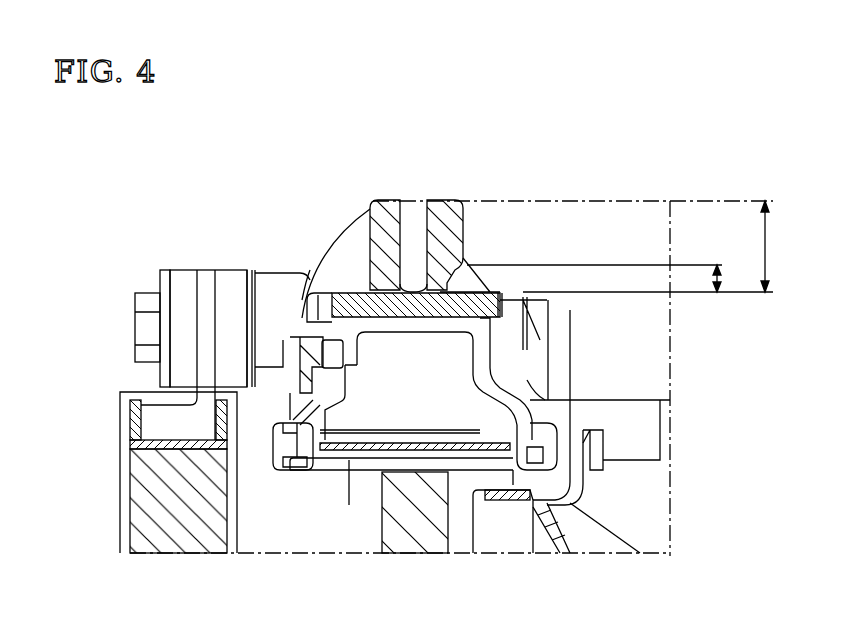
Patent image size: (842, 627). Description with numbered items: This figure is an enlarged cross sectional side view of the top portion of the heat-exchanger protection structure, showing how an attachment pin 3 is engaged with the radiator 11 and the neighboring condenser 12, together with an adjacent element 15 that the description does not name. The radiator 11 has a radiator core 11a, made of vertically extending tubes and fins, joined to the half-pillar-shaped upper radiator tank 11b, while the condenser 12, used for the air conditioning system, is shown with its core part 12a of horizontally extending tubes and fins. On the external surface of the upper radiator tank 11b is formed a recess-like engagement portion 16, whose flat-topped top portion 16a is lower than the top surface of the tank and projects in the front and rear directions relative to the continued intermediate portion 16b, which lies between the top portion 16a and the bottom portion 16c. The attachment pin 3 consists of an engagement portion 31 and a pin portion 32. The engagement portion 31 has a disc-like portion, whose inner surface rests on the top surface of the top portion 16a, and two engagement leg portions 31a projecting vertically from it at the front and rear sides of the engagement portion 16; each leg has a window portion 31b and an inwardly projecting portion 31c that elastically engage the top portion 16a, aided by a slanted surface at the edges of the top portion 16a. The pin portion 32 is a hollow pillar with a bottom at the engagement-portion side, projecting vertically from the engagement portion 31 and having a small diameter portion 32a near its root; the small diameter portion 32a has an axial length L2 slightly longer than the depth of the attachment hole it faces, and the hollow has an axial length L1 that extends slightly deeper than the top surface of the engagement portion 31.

The attachment pin 3 is at (423, 207).
The radiator 11 is at (468, 383).
The radiator core 11a is at (383, 520).
The upper radiator tank 11b is at (366, 222).
The condenser 12 is at (133, 472).
The core part 12a is at (130, 512).
The shaft 15 is at (135, 318).
The engagement portion 16 is at (504, 366).
The top portion 16a is at (693, 327).
The intermediate portion 16b is at (530, 382).
The bottom portion 16c is at (560, 448).
The engagement portion 31 is at (400, 345).
The engagement leg portion 31a is at (306, 470).
The window portion 31b is at (307, 327).
The inwardly projecting portion 31c is at (330, 337).
The pin portion 32 is at (447, 235).
The small diameter portion 32a is at (420, 220).
The axial length of the hollow L1 is at (659, 246).
The axial length of the small diameter portion L2 is at (607, 280).